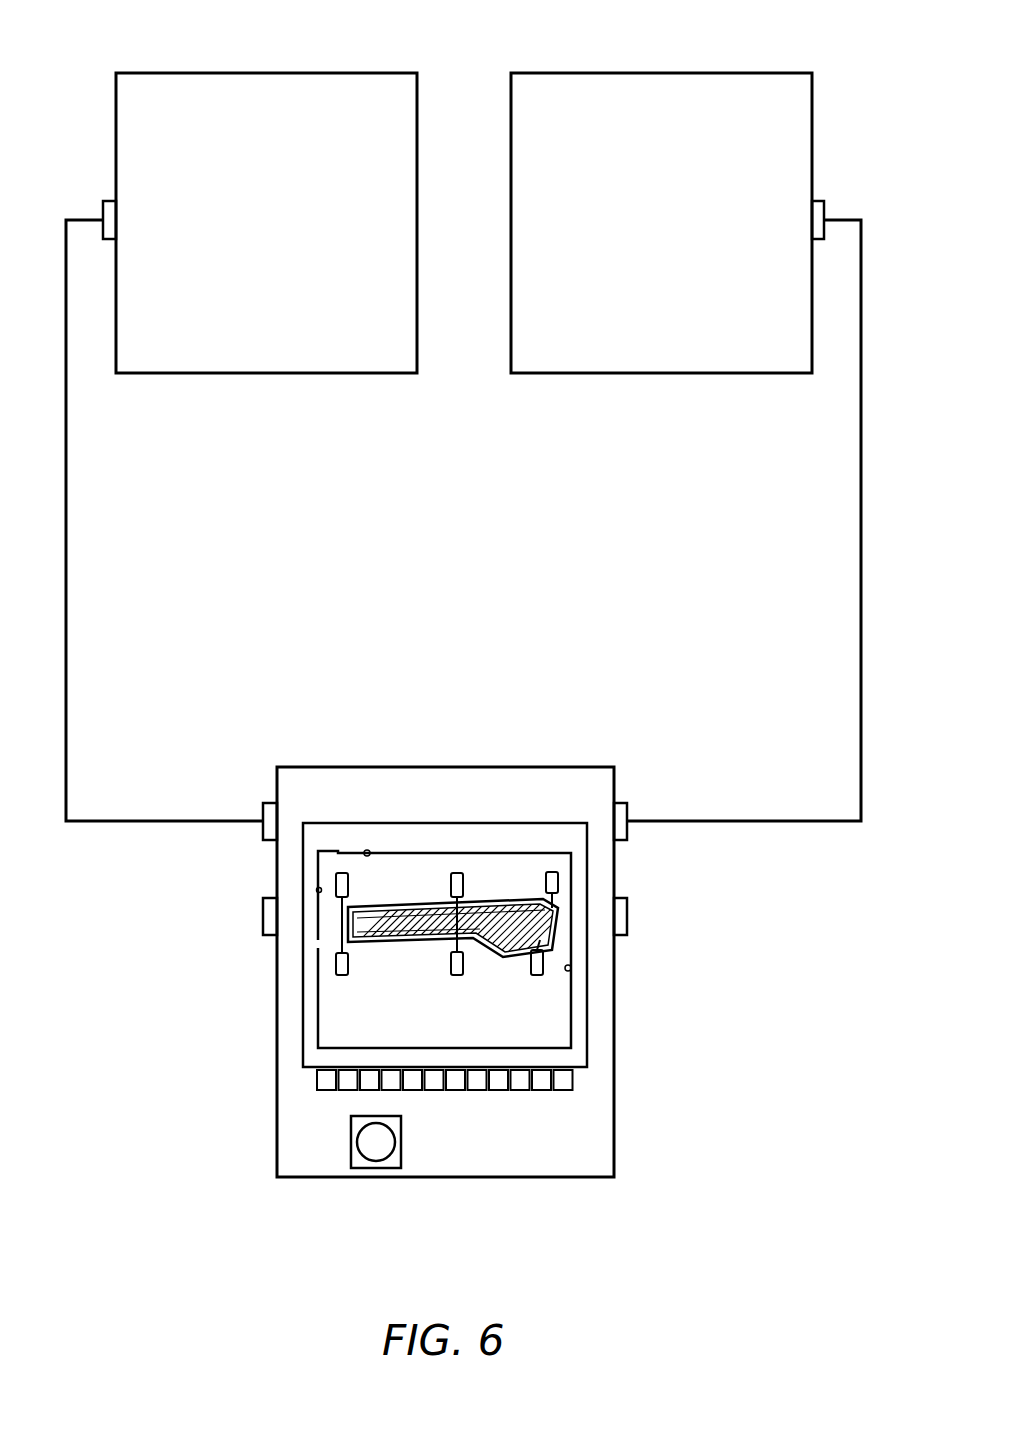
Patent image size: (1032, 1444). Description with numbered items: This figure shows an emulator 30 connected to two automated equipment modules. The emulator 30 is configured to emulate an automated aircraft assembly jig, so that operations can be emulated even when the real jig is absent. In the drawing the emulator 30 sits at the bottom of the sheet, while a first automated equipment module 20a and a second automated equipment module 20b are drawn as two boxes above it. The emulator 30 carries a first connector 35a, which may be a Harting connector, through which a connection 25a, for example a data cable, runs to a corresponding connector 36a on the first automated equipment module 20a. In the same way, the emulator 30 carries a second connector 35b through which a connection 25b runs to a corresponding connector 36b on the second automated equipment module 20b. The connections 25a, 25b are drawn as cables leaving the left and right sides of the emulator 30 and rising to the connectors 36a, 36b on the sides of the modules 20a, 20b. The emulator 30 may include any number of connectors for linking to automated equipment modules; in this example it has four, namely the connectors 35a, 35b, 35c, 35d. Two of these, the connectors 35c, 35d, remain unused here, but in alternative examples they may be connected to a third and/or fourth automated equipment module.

The first automated equipment module 20a is at (280, 95).
The second automated equipment module 20b is at (665, 95).
The connector 36a is at (110, 210).
The connector 36b is at (815, 210).
The connection 25a is at (66, 549).
The connection 25b is at (861, 493).
The emulator 30 is at (470, 790).
The first connector 35a is at (268, 808).
The second connector 35b is at (622, 805).
The connector 35c is at (270, 915).
The connector 35d is at (622, 917).